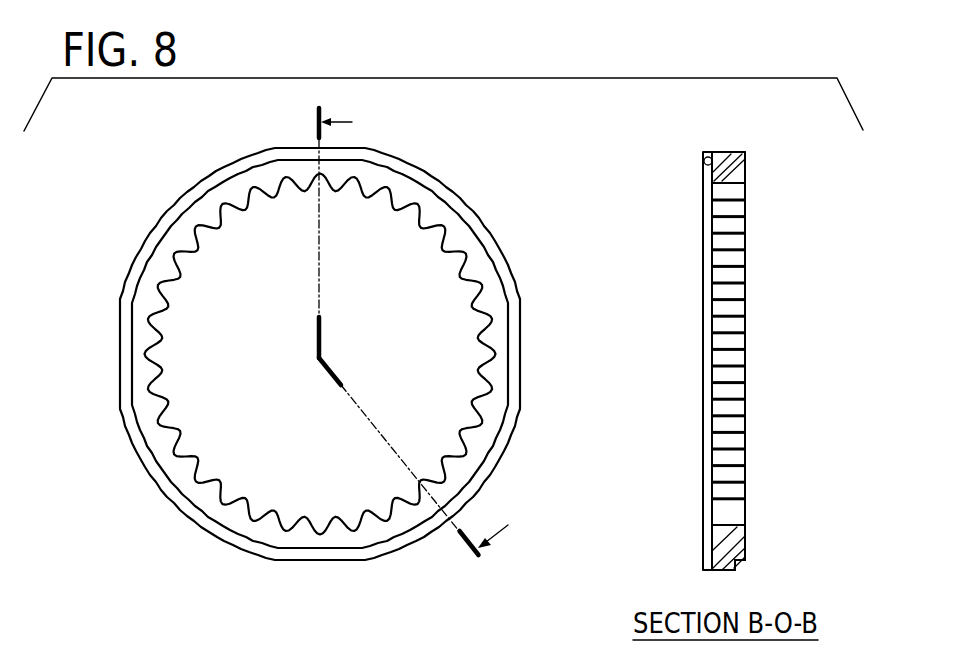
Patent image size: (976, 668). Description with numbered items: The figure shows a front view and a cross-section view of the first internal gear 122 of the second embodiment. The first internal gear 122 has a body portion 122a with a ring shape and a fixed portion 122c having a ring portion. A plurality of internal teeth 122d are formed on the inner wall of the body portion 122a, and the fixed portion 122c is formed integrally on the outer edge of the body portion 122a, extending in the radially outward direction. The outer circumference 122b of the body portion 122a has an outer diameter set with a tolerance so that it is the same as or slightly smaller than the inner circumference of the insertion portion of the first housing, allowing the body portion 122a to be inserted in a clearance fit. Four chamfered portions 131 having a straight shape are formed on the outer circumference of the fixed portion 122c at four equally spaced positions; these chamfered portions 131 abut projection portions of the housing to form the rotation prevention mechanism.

The first internal gear 122 is at (182, 175).
The body portion 122a is at (187, 244).
The outer circumference 122b is at (740, 565).
The fixed portion 122c is at (152, 242).
The internal teeth 122d is at (240, 500).
The chamfered portions 131 is at (318, 148).